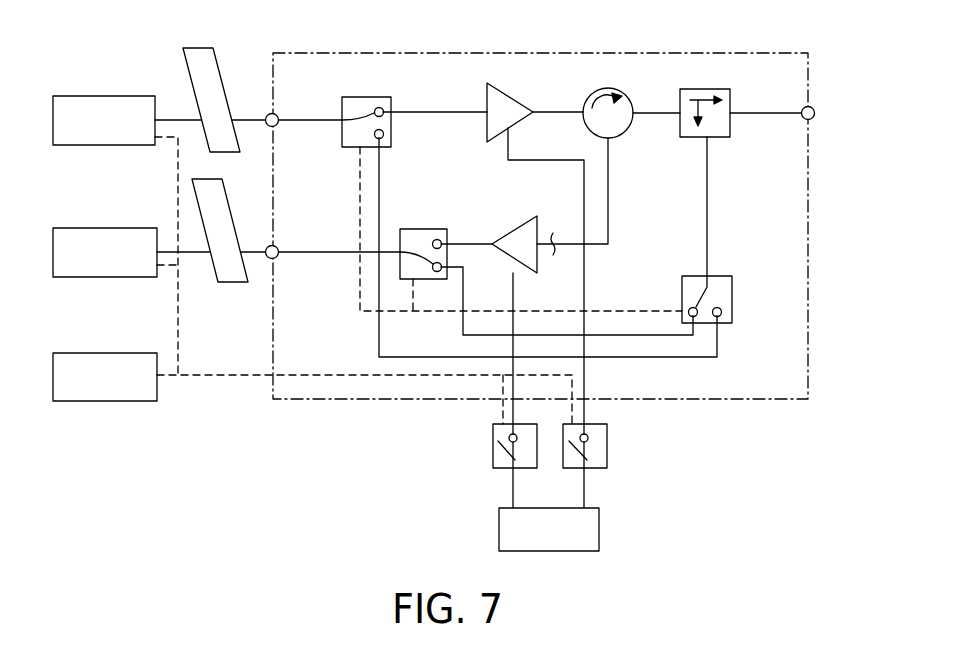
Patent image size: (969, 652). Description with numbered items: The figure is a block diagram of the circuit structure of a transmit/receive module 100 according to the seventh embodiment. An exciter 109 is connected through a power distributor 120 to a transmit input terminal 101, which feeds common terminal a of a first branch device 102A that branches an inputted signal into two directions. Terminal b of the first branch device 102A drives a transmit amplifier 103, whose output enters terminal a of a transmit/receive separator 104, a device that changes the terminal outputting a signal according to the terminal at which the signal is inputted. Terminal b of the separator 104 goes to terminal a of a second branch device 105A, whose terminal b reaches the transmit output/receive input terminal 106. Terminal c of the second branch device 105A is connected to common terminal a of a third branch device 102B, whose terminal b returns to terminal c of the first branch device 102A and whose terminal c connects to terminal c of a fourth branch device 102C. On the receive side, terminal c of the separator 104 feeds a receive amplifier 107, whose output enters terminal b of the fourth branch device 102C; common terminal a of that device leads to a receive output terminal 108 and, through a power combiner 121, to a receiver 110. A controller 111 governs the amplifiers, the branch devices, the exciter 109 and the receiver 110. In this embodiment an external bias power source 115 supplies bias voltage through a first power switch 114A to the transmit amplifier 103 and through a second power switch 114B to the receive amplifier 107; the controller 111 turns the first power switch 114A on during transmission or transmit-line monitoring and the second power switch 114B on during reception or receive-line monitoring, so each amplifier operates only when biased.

The transmit/receive module 100 is at (432, 33).
The transmit input terminal 101 is at (282, 108).
The first branch device 102A is at (370, 97).
The third branch device 102B is at (692, 276).
The fourth branch device 102C is at (428, 229).
The transmit amplifier 103 is at (507, 95).
The transmit/receive separator 104 is at (625, 94).
The second branch device 105A is at (700, 89).
The transmit output/receive input terminal 106 is at (813, 107).
The receive amplifier 107 is at (522, 223).
The receive output terminal 108 is at (282, 239).
The exciter 109 is at (103, 96).
The receiver 110 is at (103, 228).
The controller 111 is at (103, 353).
The first power switch 114A is at (607, 440).
The second power switch 114B is at (493, 440).
The bias power source 115 is at (592, 508).
The power distributor 120 is at (202, 48).
The power combiner 121 is at (228, 283).